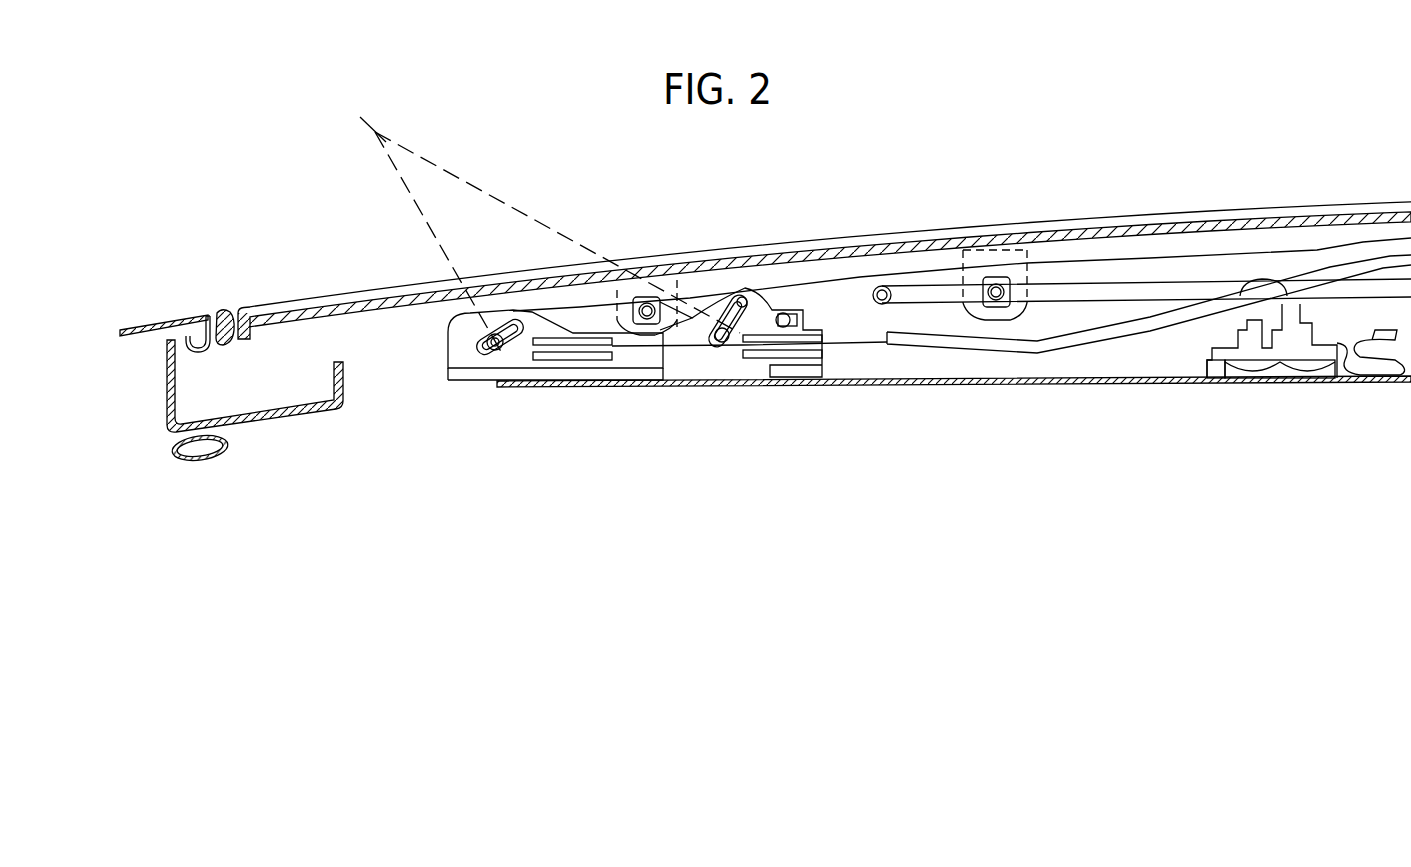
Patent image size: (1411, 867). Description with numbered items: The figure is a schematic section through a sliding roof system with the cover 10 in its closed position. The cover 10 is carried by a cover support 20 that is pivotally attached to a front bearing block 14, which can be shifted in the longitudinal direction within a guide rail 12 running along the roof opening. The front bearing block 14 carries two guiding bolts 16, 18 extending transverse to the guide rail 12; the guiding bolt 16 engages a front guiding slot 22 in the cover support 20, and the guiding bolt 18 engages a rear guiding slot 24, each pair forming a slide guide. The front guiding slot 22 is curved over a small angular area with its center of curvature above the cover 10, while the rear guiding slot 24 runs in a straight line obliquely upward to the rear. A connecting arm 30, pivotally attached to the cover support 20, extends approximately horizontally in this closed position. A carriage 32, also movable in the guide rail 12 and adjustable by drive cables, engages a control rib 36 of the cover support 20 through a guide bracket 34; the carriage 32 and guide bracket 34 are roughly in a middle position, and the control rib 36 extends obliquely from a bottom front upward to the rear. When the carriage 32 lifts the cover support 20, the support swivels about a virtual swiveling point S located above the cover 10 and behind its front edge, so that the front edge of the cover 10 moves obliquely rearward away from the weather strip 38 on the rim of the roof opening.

The cover 10 is at (912, 247).
The guide rail 12 is at (960, 383).
The front bearing block 14 is at (679, 333).
The guiding bolt 16 is at (493, 351).
The guiding bolt 18 is at (722, 353).
The cover support 20 is at (855, 318).
The front guiding slot 22 is at (514, 337).
The rear guiding slot 24 is at (740, 297).
The connecting arm 30 is at (1092, 304).
The carriage 32 is at (1337, 345).
The guide bracket 34 is at (1288, 312).
The control rib 36 is at (1163, 322).
The weather strip 38 is at (223, 311).
The swiveling point S is at (382, 128).